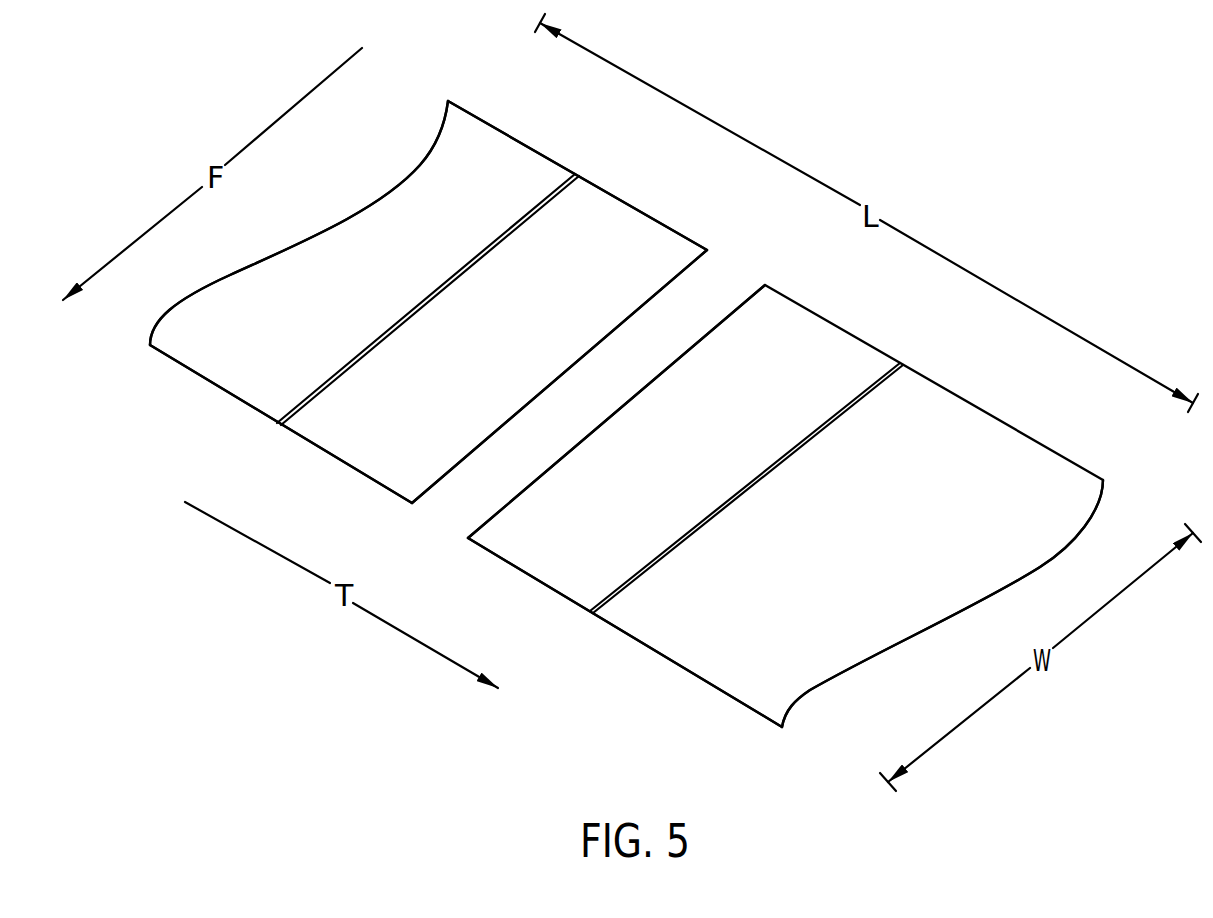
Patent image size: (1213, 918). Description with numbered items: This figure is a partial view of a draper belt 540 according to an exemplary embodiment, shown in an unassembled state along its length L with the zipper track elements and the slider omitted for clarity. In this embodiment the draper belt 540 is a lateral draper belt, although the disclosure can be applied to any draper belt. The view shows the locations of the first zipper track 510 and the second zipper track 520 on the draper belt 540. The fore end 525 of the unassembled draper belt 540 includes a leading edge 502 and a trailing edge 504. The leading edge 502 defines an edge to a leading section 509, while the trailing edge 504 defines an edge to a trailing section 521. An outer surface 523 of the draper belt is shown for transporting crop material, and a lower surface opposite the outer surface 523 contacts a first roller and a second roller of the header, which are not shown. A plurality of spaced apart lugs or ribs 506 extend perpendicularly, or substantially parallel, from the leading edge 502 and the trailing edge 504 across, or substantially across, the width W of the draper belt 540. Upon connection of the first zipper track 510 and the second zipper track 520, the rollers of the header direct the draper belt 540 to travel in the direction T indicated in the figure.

The leading edge 502 is at (476, 527).
The trailing edge 504 is at (420, 503).
The lugs or ribs 506 is at (522, 208).
The leading section 509 is at (548, 568).
The first zipper track 510 is at (755, 292).
The second zipper track 520 is at (703, 262).
The trailing section 521 is at (628, 223).
The outer surface 523 is at (348, 247).
The fore end 525 is at (212, 386).
The draper belt 540 is at (883, 617).